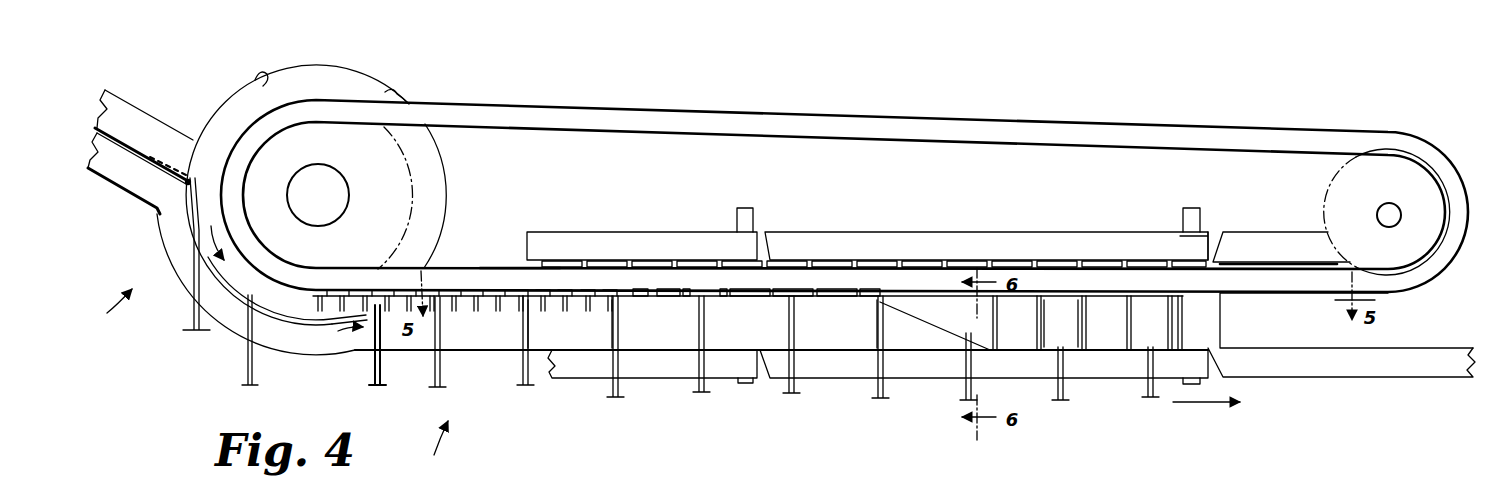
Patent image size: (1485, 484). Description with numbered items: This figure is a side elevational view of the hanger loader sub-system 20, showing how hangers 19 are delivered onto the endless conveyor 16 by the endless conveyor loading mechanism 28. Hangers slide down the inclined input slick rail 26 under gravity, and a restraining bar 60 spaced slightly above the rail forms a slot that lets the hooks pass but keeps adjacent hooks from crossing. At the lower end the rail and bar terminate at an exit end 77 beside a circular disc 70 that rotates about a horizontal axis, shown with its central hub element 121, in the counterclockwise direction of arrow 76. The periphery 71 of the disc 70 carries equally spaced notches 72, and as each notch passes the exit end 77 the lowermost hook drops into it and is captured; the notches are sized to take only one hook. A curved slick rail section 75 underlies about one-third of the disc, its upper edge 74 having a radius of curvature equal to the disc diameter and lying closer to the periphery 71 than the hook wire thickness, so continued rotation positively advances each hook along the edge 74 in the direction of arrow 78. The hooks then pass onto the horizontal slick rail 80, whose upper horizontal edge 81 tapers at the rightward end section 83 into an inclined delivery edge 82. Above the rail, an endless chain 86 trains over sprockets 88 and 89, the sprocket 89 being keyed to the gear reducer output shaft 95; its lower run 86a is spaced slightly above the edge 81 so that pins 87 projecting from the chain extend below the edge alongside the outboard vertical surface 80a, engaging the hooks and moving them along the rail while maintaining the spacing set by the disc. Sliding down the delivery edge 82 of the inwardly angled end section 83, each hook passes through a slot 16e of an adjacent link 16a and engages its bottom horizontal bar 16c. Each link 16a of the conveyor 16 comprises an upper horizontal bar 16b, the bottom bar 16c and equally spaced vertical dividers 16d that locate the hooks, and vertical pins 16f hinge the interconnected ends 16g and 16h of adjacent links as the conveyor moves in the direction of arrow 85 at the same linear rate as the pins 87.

The endless conveyor 16 is at (1348, 368).
The hinged link 16a is at (773, 381).
The upper horizontal bar 16b is at (1017, 252).
The bottom horizontal bar 16c is at (1020, 368).
The vertical divider 16d is at (1073, 336).
The slot 16e is at (1150, 314).
The vertical pin 16f is at (743, 214).
The link end 16g is at (1193, 238).
The link end 16h is at (1209, 334).
The hanger 19 is at (188, 317).
The hanger loader sub-system 20 is at (447, 441).
The input slick rail 26 is at (118, 178).
The endless conveyor loading mechanism 28 is at (120, 311).
The restraining bar 60 is at (170, 138).
The circular disc 70 is at (302, 82).
The periphery of the disc 71 is at (221, 104).
The notch 72 is at (260, 80).
The upper edge of curved slick rail section 74 is at (223, 290).
The curved slick rail section 75 is at (286, 336).
The arrow 76 is at (225, 233).
The exit end 77 is at (187, 184).
The arrow 78 is at (350, 340).
The horizontal slick rail 80 is at (760, 323).
The outboard vertical surface 80a is at (578, 343).
The upper horizontal edge 81 is at (661, 298).
The inclined delivery edge 82 is at (940, 324).
The slick rail end section 83 is at (870, 341).
The arrow 85 is at (1190, 413).
The endless chain 86 is at (844, 196).
The lower run of the chain 86a is at (488, 268).
The pin 87 is at (520, 312).
The sprocket 88 is at (418, 185).
The sprocket 89 is at (1363, 212).
The output shaft 95 is at (1410, 188).
The drum shaft 121 is at (328, 218).